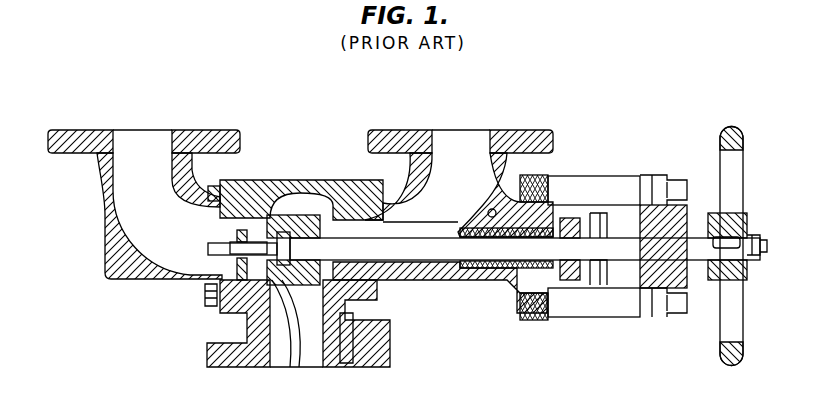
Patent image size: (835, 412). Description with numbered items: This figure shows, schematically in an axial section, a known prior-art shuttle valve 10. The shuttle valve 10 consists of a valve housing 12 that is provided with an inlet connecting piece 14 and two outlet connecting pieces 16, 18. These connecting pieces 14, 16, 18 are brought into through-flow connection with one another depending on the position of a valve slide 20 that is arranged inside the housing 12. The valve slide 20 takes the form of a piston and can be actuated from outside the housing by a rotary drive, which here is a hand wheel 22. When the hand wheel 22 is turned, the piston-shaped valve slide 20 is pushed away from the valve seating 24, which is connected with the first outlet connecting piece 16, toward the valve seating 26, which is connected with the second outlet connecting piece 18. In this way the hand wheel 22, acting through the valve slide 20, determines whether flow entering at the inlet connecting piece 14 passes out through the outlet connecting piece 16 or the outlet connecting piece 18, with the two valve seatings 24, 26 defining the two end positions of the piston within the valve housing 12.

The shuttle valve 10 is at (170, 314).
The valve housing 12 is at (282, 184).
The inlet connecting piece 14 is at (384, 365).
The outlet connecting piece 16 is at (210, 132).
The outlet connecting piece 18 is at (382, 132).
The valve slide 20 is at (299, 367).
The hand wheel 22 is at (718, 353).
The valve seating 24 is at (274, 367).
The valve seating 26 is at (347, 328).